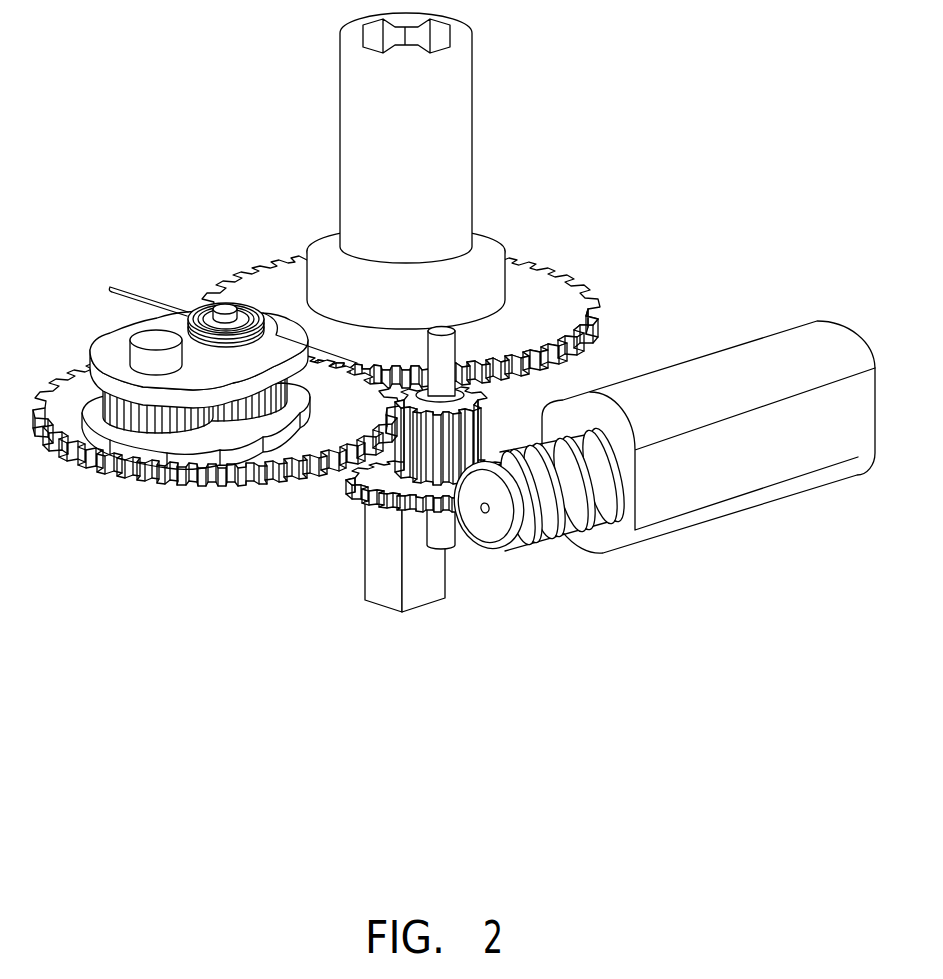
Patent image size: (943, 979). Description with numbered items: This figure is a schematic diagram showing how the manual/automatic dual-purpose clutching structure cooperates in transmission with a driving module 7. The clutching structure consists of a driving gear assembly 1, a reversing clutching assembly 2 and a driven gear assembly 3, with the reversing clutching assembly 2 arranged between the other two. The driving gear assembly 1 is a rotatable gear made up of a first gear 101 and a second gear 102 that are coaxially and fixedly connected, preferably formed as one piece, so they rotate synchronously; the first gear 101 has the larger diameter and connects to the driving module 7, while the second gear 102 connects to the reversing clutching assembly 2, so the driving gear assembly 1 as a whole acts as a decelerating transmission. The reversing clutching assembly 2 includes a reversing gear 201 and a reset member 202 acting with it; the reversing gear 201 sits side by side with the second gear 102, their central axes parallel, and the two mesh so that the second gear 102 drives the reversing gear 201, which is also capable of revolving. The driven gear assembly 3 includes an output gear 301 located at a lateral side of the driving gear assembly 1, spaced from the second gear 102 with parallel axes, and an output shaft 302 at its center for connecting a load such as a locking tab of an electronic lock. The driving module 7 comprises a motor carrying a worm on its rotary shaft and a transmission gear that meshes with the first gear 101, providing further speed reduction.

The driving gear assembly 1 is at (216, 493).
The first gear 101 is at (333, 583).
The second gear 102 is at (263, 395).
The reversing clutching assembly 2 is at (178, 351).
The reversing gear 201 is at (123, 407).
The reset member 202 is at (190, 310).
The driven gear assembly 3 is at (447, 200).
The output gear 301 is at (543, 284).
The output shaft 302 is at (460, 171).
The driving module 7 is at (670, 492).